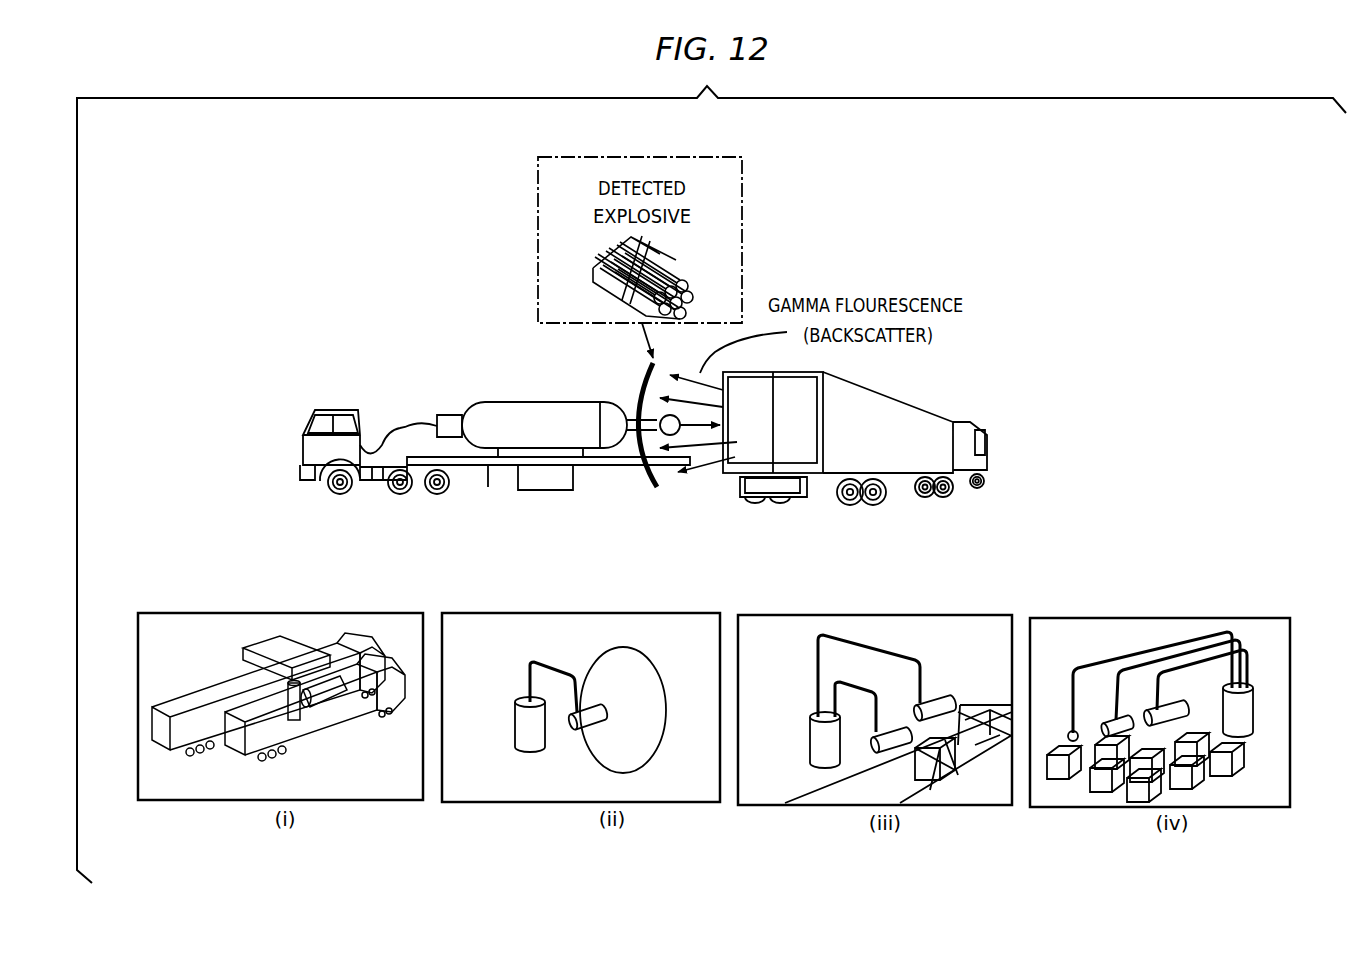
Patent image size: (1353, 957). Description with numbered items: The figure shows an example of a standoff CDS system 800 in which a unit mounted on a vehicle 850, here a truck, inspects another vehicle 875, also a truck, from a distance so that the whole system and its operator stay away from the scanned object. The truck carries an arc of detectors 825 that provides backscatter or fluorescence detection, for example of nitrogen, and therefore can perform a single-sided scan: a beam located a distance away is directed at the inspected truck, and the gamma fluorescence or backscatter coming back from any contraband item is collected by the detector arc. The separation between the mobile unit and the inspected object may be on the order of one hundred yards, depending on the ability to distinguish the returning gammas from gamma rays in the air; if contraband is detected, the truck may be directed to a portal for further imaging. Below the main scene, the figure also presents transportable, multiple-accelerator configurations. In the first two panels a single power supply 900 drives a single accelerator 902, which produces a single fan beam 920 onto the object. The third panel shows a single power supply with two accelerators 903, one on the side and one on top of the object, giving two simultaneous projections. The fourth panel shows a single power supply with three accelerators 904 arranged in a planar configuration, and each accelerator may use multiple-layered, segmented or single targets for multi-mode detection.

The vehicle 850 is at (333, 410).
The standoff CDS system 800 is at (507, 402).
The arc of detectors 825 is at (645, 372).
The vehicle 875 is at (893, 452).
The fan beam 920 is at (612, 668).
The power supply 900 is at (513, 713).
The accelerator 902 is at (577, 733).
The two accelerators 903 is at (972, 662).
The three accelerators 904 is at (1210, 707).